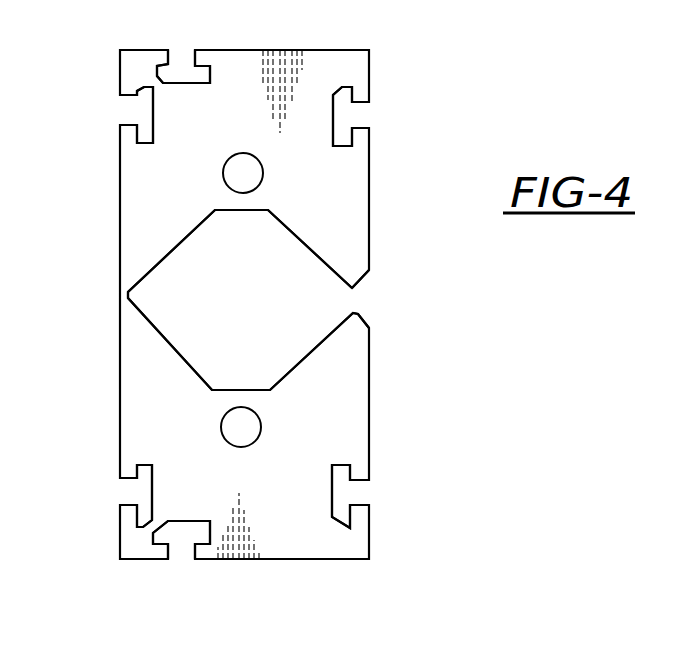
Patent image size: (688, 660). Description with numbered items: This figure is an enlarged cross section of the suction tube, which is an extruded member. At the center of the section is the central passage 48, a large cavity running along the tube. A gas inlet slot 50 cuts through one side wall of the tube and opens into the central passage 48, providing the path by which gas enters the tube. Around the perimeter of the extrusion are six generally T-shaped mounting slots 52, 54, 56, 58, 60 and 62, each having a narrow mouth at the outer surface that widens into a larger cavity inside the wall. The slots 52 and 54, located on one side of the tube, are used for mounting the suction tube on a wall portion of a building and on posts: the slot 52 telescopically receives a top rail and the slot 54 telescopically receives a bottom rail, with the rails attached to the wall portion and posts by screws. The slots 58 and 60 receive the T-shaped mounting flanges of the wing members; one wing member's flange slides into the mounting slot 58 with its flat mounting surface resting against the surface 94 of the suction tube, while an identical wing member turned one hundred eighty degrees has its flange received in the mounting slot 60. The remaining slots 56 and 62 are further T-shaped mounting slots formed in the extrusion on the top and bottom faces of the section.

The central passage 48 is at (174, 354).
The gas inlet slot 50 is at (360, 312).
The T-shaped mounting slot 52 is at (152, 118).
The T-shaped mounting slot 54 is at (152, 489).
The T-shaped mounting slot 56 is at (187, 521).
The T-shaped mounting slot 58 is at (333, 495).
The T-shaped mounting slot 60 is at (334, 118).
The T-shaped mounting slot 62 is at (177, 82).
The surface 94 is at (369, 400).